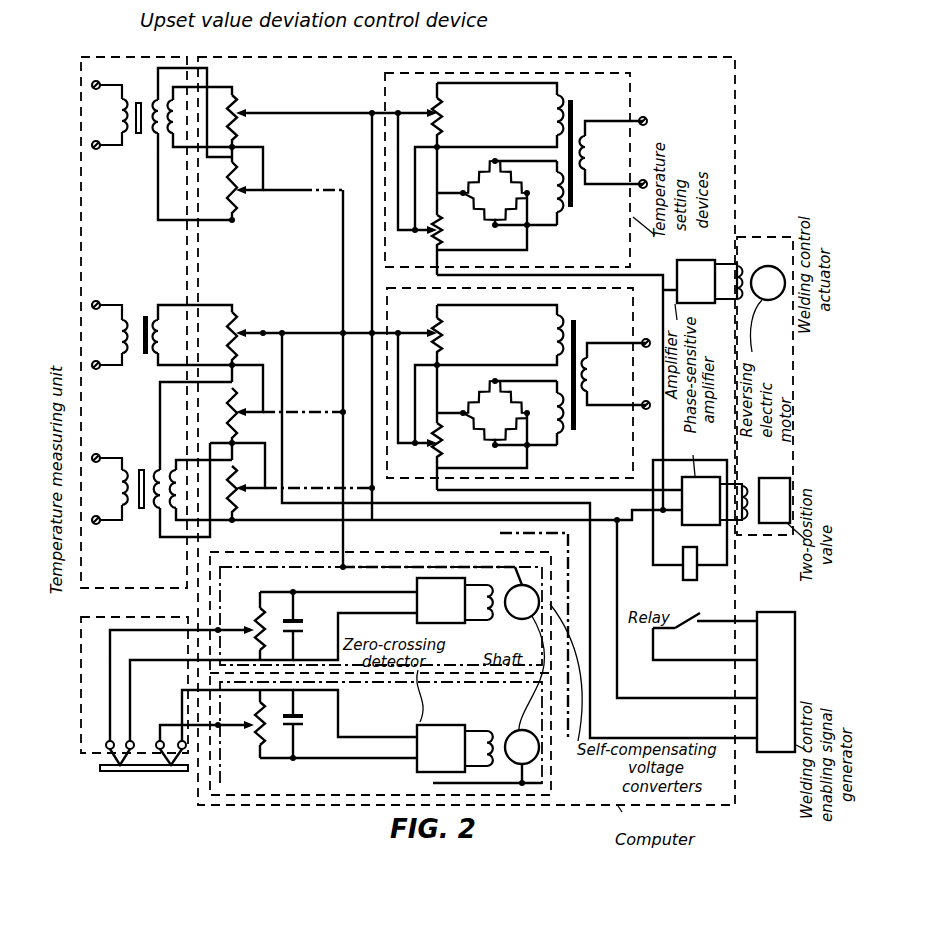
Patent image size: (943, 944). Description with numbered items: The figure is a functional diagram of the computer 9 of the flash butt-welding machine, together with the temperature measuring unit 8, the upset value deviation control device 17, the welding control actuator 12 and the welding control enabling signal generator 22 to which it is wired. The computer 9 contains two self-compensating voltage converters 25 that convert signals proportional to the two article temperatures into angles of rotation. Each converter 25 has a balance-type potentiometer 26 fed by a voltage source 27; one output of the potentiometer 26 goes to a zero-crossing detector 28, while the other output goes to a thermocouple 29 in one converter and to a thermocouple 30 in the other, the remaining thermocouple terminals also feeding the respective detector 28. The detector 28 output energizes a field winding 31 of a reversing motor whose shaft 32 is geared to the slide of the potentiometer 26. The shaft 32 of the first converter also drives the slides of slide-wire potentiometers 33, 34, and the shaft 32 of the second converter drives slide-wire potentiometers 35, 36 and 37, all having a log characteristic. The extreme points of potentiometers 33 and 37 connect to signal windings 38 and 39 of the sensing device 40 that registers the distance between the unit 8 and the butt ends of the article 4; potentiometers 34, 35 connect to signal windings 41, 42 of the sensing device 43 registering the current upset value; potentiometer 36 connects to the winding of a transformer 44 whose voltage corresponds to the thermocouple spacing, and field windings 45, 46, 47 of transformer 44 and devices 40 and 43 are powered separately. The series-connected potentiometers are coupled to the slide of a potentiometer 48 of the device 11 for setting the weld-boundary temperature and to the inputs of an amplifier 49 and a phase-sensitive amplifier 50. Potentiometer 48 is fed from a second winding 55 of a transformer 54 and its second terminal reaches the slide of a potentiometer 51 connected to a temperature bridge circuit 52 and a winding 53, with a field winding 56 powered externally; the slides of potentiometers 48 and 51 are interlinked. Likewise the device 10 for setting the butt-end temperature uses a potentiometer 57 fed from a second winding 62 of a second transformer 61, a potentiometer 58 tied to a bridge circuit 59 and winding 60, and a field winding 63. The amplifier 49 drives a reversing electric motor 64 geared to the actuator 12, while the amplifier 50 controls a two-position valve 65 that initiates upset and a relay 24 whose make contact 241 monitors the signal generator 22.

The article 4 is at (126, 772).
The temperature measuring unit 8 is at (80, 671).
The computer 9 is at (737, 756).
The device for setting temperature Tk 10 is at (636, 322).
The device for setting temperature Tb 11 is at (634, 88).
The welding control actuator 12 is at (786, 236).
The upset value deviation control device 17 is at (130, 56).
The welding control enabling signal generator 22 is at (776, 682).
The relay 24 is at (683, 579).
The make contact 241 is at (706, 610).
The self-compensating voltage converter 25 is at (557, 633).
The balance-type potentiometer 26 is at (255, 620).
The voltage source 27 is at (300, 625).
The zero-crossing detector 28 is at (379, 675).
The thermocouple 29 is at (108, 772).
The thermocouple 30 is at (170, 772).
The field winding 31 is at (492, 615).
The shaft 32 is at (524, 590).
The slide-wire potentiometer 33 is at (237, 475).
The slide-wire potentiometer 34 is at (236, 105).
The slide-wire potentiometer 35 is at (238, 199).
The slide-wire potentiometer 36 is at (236, 315).
The slide-wire potentiometer 37 is at (237, 395).
The signal winding 38 is at (157, 515).
The signal winding 39 is at (175, 522).
The sensing device 40 is at (141, 466).
The signal winding 41 is at (168, 100).
The signal winding 42 is at (152, 136).
The sensing device 43 is at (131, 144).
The transformer 44 is at (146, 306).
The field winding 45 is at (120, 114).
The field winding 46 is at (120, 333).
The field winding 47 is at (120, 486).
The potentiometer 48 is at (440, 104).
The amplifier 49 is at (710, 281).
The phase-sensitive amplifier 50 is at (700, 512).
The potentiometer 51 is at (433, 240).
The temperature bridge circuit 52 is at (476, 176).
The winding 53 is at (558, 187).
The transformer 54 is at (578, 185).
The second winding 55 is at (552, 120).
The field winding 56 is at (588, 151).
The potentiometer 57 is at (441, 330).
The potentiometer 58 is at (434, 456).
The temperature bridge circuit 59 is at (476, 394).
The winding 60 is at (560, 425).
The second transformer 61 is at (580, 425).
The second winding 62 is at (553, 336).
The field winding 63 is at (590, 373).
The reversing electric motor 64 is at (767, 300).
The two-position valve 65 is at (774, 500).